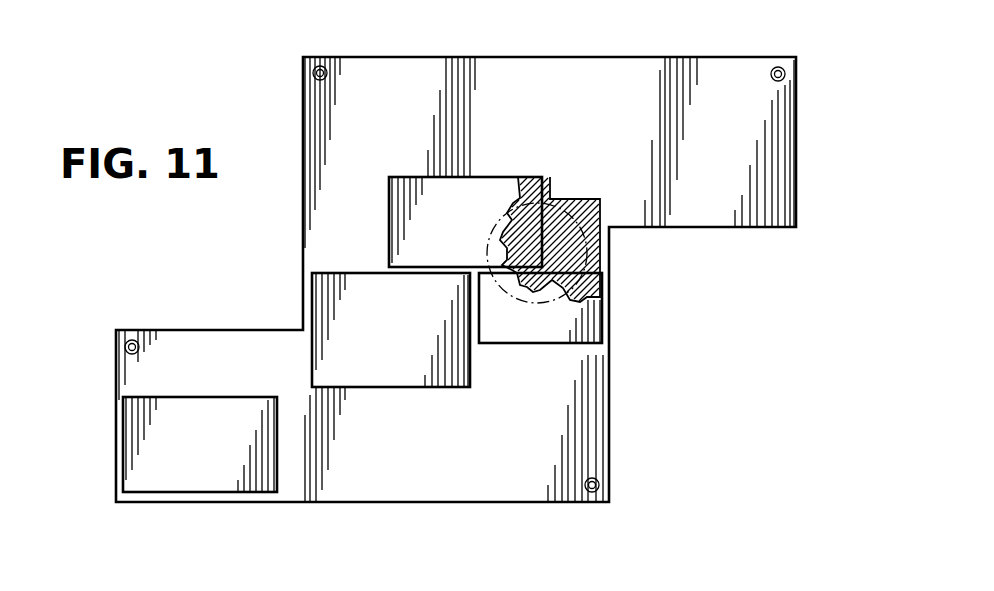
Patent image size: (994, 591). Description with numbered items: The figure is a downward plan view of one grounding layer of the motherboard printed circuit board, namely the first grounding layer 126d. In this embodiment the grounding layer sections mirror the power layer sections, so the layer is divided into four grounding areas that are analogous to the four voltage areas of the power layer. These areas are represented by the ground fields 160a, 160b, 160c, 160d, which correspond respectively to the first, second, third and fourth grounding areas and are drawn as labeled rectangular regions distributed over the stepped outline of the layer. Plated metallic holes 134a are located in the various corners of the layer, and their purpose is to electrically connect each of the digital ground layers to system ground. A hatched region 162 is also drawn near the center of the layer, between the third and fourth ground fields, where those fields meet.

The grounding layer G1 126d is at (520, 56).
The plated metallic holes 134a is at (319, 66).
The ground field 160a is at (205, 475).
The ground field 160b is at (412, 372).
The ground field 160c is at (478, 176).
The ground field 160d is at (590, 320).
The gear engagement region 162 is at (574, 257).